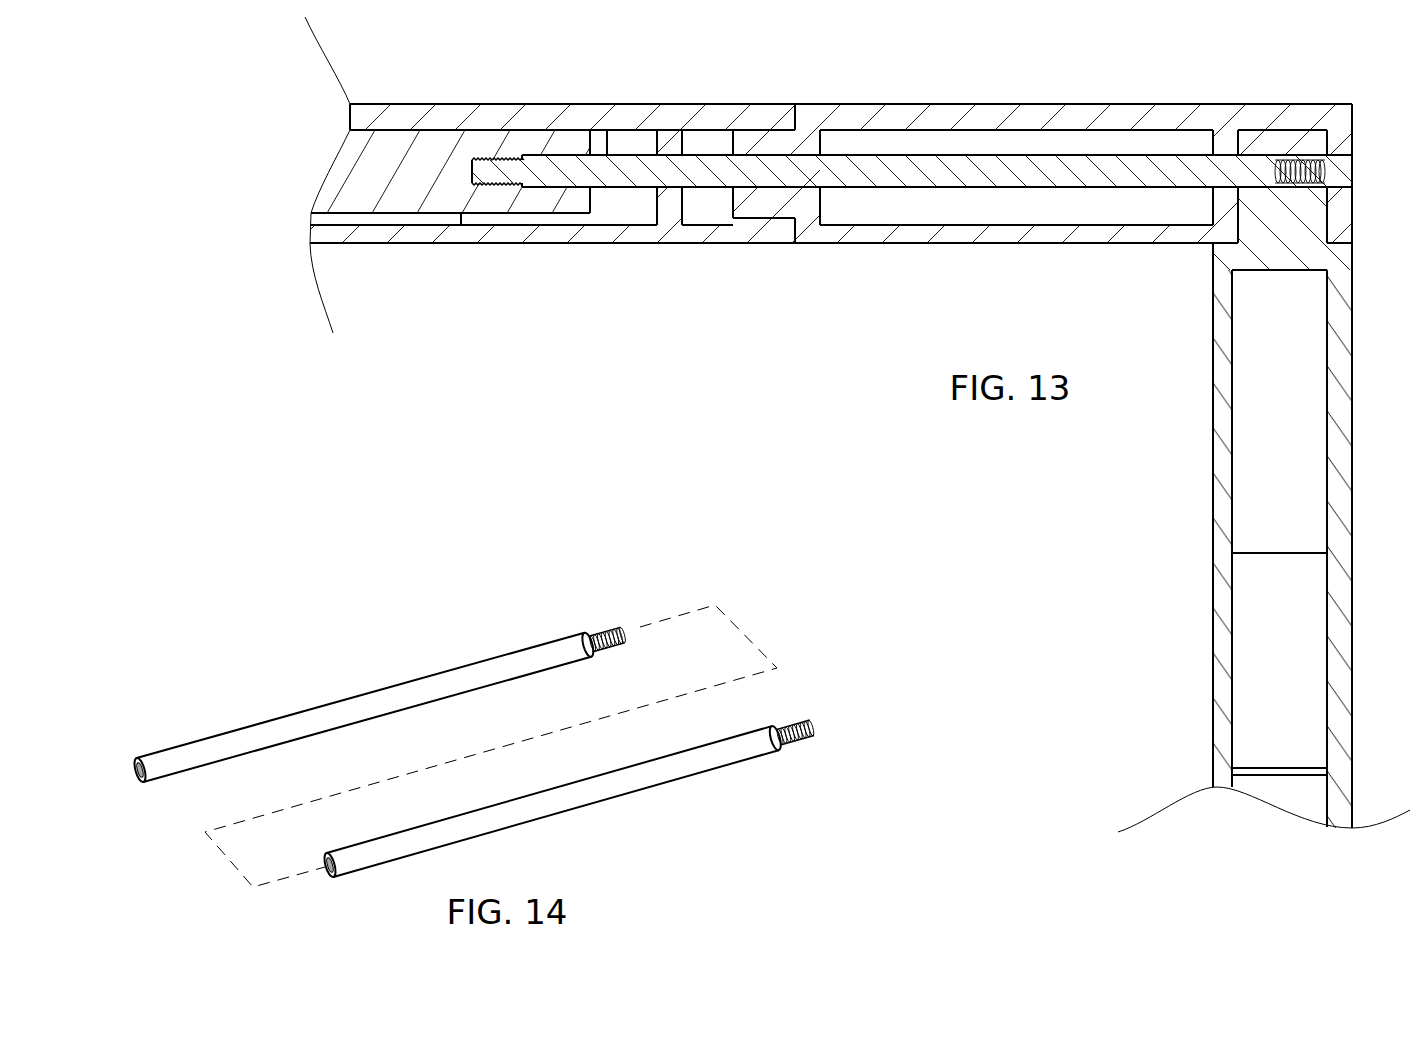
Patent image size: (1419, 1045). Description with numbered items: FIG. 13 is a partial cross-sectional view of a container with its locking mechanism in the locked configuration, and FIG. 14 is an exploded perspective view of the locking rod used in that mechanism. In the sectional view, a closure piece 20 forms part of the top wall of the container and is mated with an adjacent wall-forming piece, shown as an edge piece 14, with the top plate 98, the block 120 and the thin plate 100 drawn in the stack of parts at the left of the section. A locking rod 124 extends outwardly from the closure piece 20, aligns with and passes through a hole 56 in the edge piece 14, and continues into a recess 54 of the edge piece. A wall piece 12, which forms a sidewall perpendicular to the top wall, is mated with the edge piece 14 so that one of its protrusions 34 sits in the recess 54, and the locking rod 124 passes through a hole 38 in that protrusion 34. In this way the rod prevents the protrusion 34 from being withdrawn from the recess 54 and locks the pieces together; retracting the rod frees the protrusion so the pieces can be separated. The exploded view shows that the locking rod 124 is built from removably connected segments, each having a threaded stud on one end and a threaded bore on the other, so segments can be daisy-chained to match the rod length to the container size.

In FIG. 13, the wall piece 12 is at (1352, 597).
In FIG. 13, the edge piece 14 is at (1122, 104).
In FIG. 13, the closure piece 20 is at (378, 245).
In FIG. 13, the protrusion 34 is at (1287, 225).
In FIG. 13, the hole 38 is at (1310, 104).
In FIG. 13, the recess 54 is at (1327, 133).
In FIG. 13, the hole 56 is at (808, 192).
In FIG. 13, the top plate 98 is at (403, 104).
In FIG. 13, the shim plate 100 is at (485, 250).
In FIG. 13, the block 120 is at (460, 153).
In FIG. 13, the locking rod 124 is at (943, 168).
In FIG. 14, the locking rod 124 is at (314, 603).